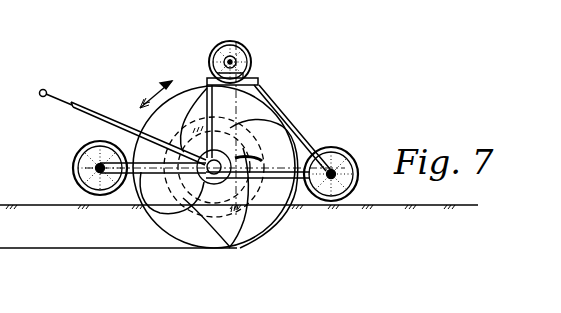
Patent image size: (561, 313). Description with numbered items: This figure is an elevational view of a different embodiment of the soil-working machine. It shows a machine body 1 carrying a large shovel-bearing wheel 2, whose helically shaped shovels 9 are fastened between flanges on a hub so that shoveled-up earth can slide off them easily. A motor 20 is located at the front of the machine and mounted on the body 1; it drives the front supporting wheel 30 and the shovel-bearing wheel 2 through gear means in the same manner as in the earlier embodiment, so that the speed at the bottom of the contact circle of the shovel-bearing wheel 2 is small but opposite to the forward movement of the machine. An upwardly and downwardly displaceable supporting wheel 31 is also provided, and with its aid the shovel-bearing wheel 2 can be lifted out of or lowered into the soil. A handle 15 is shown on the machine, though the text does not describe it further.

The machine body 1 is at (280, 111).
The shovel-bearing wheel 2 is at (276, 224).
The shovels 9 is at (236, 236).
The handle 15 is at (66, 101).
The motor 20 is at (250, 63).
The front supporting wheel 30 is at (357, 173).
The upwardly and downwardly displaceable supporting wheel 31 is at (74, 168).